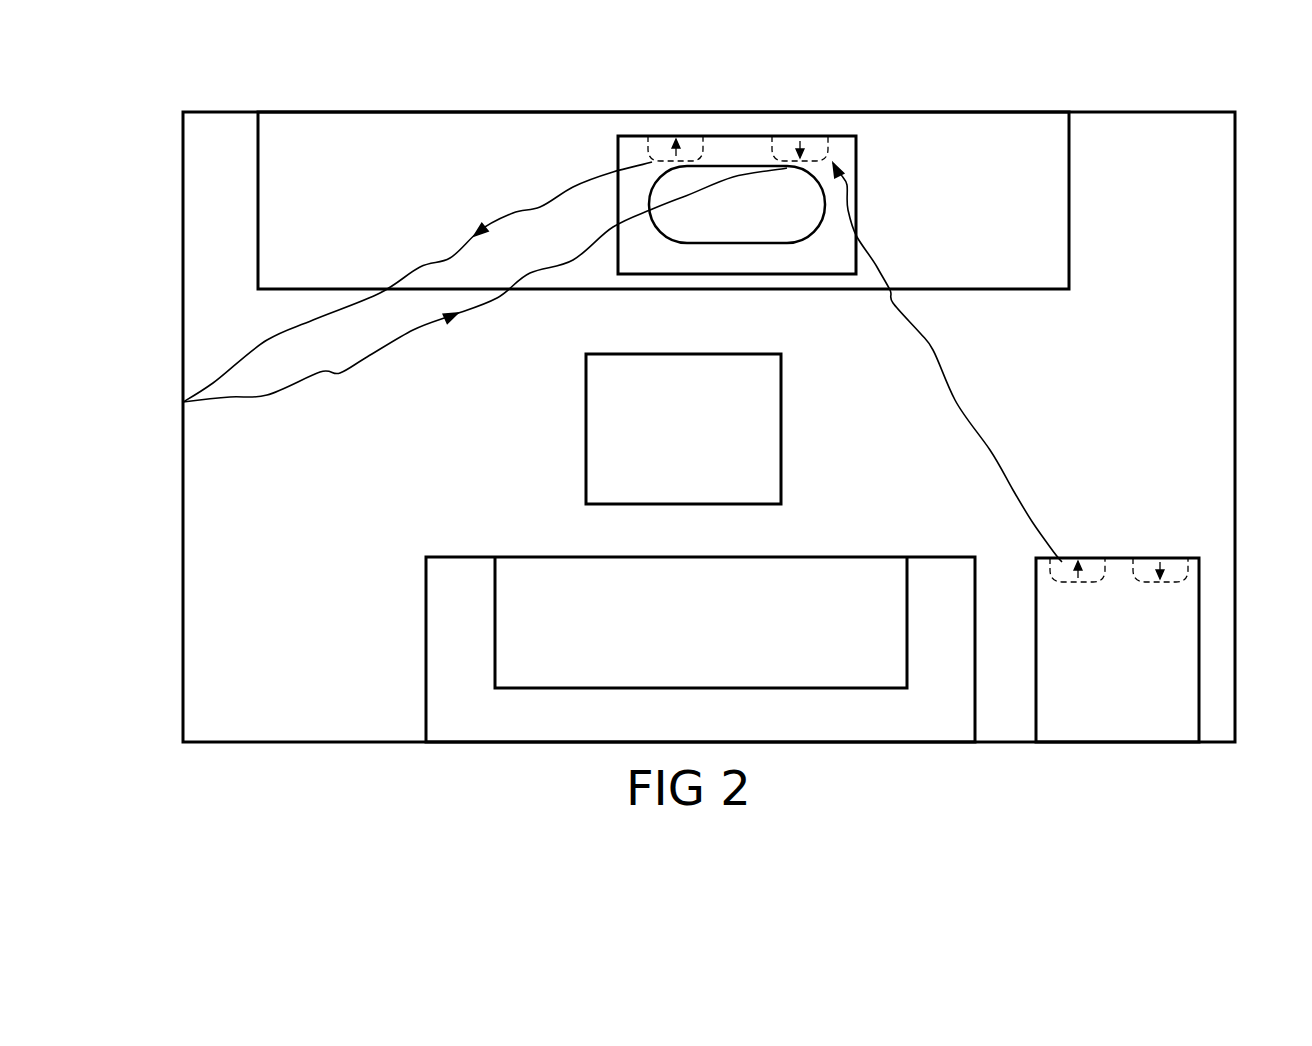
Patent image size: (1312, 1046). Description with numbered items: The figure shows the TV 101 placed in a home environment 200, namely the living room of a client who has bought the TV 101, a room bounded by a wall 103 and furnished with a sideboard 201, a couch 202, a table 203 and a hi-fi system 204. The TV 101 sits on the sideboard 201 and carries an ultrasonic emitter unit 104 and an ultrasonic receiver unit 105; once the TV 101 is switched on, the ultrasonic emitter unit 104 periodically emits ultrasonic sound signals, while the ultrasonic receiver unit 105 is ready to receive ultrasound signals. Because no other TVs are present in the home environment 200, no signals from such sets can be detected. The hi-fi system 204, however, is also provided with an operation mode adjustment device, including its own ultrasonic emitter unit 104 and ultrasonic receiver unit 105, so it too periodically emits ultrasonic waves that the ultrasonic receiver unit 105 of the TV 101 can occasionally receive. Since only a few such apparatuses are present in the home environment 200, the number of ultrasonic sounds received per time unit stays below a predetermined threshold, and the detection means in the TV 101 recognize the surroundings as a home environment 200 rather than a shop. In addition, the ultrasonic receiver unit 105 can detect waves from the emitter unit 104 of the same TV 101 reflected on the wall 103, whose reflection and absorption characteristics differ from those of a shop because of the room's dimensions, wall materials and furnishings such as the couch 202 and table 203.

The home environment 200 is at (1038, 111).
The wall 103 is at (183, 700).
The sideboard 201 is at (1020, 277).
The TV 101 is at (862, 183).
The ultrasonic emitter unit 104 is at (650, 150).
The ultrasonic receiver unit 105 is at (828, 150).
The table 203 is at (586, 440).
The couch 202 is at (432, 632).
The hi-fi system 204 is at (1119, 558).